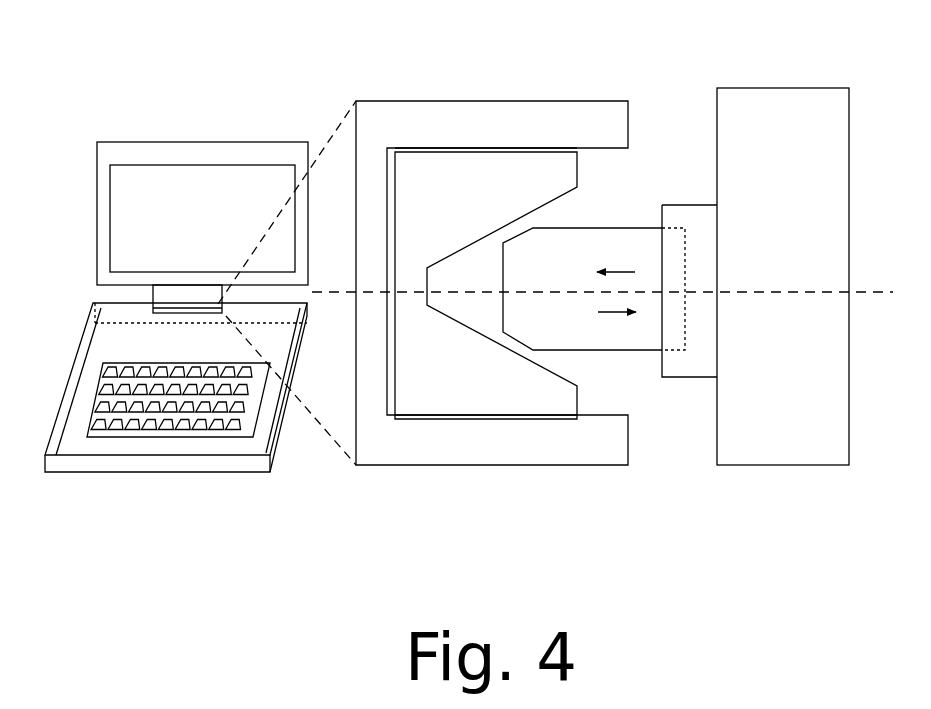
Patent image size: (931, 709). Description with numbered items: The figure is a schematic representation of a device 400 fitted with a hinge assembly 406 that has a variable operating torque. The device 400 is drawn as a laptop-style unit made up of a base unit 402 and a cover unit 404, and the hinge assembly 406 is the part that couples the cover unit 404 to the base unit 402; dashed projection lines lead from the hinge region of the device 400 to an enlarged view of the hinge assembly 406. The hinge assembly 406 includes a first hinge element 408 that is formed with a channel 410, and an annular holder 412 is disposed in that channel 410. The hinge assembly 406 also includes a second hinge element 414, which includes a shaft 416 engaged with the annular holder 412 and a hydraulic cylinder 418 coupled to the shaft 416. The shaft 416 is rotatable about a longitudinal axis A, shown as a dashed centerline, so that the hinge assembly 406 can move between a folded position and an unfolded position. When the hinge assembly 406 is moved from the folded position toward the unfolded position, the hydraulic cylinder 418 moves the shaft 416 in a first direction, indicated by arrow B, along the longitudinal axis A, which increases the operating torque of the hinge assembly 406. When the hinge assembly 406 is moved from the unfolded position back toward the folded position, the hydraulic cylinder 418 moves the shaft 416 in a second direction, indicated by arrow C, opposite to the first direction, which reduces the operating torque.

The device 400 is at (169, 311).
The base unit 402 is at (210, 490).
The cover unit 404 is at (85, 150).
The hinge assembly 406 is at (183, 293).
The first hinge element 408 is at (547, 302).
The channel 410 is at (608, 395).
The annular holder 412 is at (523, 175).
The second hinge element 414 is at (808, 483).
The shaft 416 is at (582, 243).
The hydraulic cylinder 418 is at (700, 330).
The longitudinal axis A is at (877, 287).
The arrow B (first direction) B is at (624, 270).
The arrow C (second direction) C is at (618, 316).